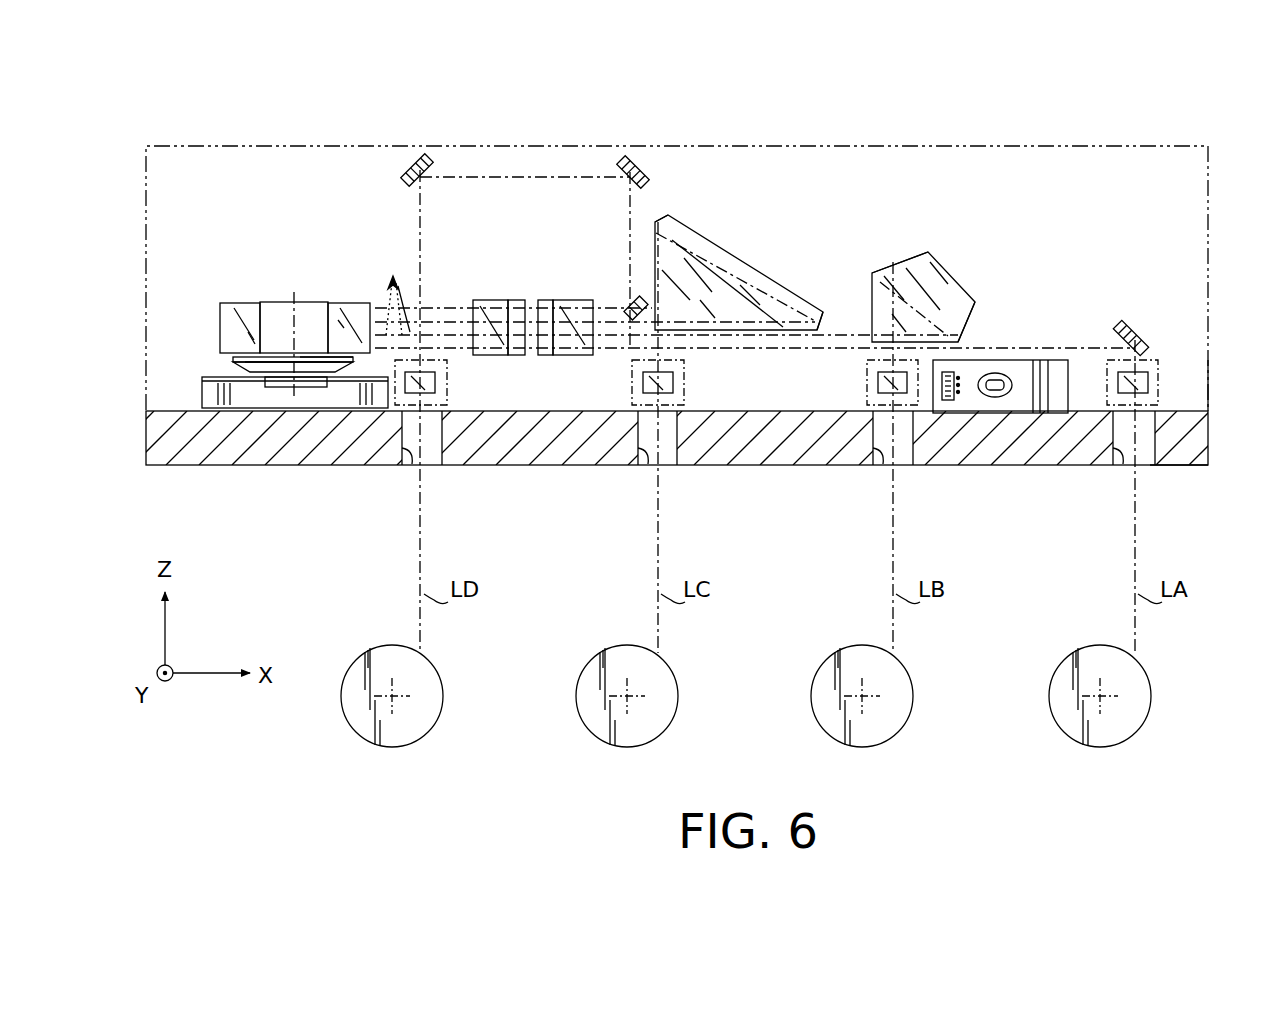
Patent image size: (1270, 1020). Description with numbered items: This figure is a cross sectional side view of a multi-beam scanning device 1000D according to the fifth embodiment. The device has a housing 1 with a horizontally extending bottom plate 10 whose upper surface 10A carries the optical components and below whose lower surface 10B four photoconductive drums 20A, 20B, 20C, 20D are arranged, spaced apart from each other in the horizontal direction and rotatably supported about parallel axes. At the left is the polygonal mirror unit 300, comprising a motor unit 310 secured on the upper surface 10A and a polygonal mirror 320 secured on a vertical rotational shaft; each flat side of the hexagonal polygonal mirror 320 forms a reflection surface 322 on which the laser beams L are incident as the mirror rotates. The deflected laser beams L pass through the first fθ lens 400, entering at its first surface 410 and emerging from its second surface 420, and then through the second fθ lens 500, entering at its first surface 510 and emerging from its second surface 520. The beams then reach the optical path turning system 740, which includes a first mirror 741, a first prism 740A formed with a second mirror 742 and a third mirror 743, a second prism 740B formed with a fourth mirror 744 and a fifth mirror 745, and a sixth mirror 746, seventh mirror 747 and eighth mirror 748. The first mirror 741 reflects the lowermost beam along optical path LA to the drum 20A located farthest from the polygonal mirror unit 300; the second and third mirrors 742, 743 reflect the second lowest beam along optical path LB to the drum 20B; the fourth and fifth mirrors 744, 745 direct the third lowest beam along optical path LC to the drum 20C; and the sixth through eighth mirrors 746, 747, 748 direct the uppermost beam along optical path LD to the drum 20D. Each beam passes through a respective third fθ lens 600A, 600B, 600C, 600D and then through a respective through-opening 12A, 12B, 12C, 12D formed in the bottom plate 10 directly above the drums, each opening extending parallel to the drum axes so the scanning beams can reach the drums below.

The housing 1 is at (1085, 148).
The multi-beam scanning device 1000D is at (1018, 73).
The bottom plate 10 is at (1174, 468).
The upper surface 10A is at (1204, 408).
The lower surface 10B is at (1198, 466).
The opening 12A is at (1120, 462).
The opening 12B is at (882, 462).
The opening 12C is at (642, 462).
The opening 12D is at (406, 462).
The photoconductive drum 20A is at (1074, 654).
The photoconductive drum 20B is at (838, 656).
The photoconductive drum 20C is at (602, 656).
The photoconductive drum 20D is at (367, 656).
The polygonal mirror unit 300 is at (285, 279).
The motor unit 310 is at (210, 396).
The polygonal mirror 320 is at (338, 302).
The reflection surface 322 is at (229, 302).
The first fθ lens 400 is at (502, 312).
The first surface 410 is at (476, 298).
The second surface 420 is at (526, 356).
The second fθ lens 500 is at (562, 315).
The first surface 510 is at (542, 298).
The second surface 520 is at (594, 356).
The third fθ lens 600A is at (1146, 375).
The third fθ lens 600B is at (882, 382).
The third fθ lens 600C is at (676, 382).
The third fθ lens 600D is at (438, 382).
The optical path turning system 740 is at (895, 254).
The first prism 740A is at (938, 278).
The second prism 740B is at (748, 247).
The first mirror 741 is at (1128, 322).
The second mirror 742 is at (966, 314).
The third mirror 743 is at (908, 263).
The fourth mirror 744 is at (821, 316).
The fifth mirror 745 is at (660, 219).
The sixth mirror 746 is at (630, 298).
The seventh mirror 747 is at (615, 170).
The eighth mirror 748 is at (404, 181).
The laser beams L is at (394, 292).
The optical path LA is at (1062, 340).
The optical path LB is at (838, 331).
The optical path LC is at (722, 302).
The optical path LD is at (605, 304).